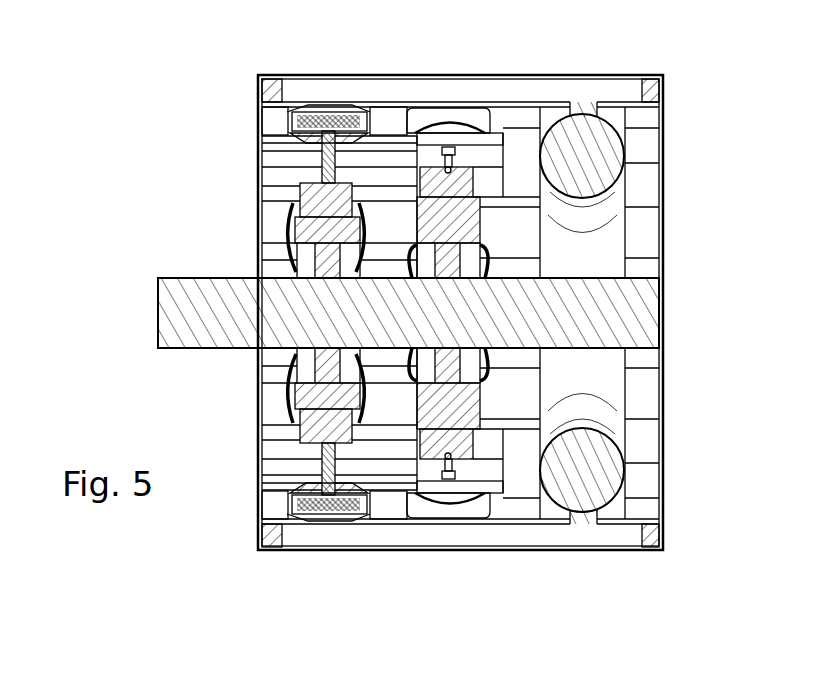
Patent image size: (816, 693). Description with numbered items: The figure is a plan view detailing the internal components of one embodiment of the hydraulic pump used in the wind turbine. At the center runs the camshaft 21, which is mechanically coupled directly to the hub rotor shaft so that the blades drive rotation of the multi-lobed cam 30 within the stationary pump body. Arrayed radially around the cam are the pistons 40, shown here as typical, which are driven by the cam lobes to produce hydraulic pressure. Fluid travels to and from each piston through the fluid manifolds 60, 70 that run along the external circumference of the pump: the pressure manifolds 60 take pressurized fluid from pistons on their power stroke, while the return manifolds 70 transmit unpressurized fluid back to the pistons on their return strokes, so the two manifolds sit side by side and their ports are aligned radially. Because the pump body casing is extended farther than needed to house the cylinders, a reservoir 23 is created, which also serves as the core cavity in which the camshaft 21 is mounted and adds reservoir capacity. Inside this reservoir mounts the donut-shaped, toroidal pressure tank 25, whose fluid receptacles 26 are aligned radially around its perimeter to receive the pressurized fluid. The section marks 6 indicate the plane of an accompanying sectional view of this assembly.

The section line 6- 6 is at (388, 65).
The camshaft 21 is at (157, 313).
The fluid reservoir 23 is at (663, 165).
The pressure tank 25 is at (603, 388).
The fluid receptacles 26 is at (583, 108).
The multi-lobed cam 30 is at (458, 230).
The pistons 40 is at (285, 160).
The pressure manifolds 60 is at (295, 88).
The return manifolds 70 is at (308, 538).